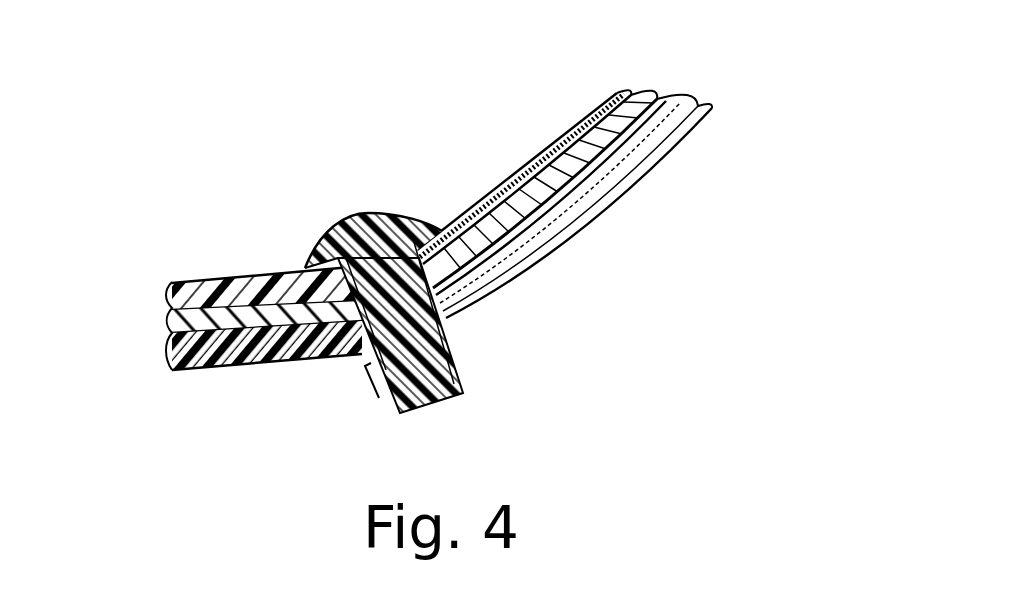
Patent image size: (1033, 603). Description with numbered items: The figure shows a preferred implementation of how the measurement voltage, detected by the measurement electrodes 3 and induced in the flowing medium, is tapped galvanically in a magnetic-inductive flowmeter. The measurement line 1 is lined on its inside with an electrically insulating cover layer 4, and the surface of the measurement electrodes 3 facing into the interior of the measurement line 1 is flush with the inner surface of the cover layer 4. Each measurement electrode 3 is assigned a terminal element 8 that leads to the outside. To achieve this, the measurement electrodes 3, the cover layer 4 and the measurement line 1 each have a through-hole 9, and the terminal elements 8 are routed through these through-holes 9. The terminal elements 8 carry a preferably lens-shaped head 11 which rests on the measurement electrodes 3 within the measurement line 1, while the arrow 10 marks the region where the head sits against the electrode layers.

The measurement line 1 is at (658, 167).
The measurement electrodes 3 is at (541, 153).
The cover layer 4 is at (212, 290).
The terminal element 8 is at (200, 323).
The through-hole 9 is at (545, 352).
The clamp notch / contact point 10 is at (345, 387).
The lens-shaped head 11 is at (378, 210).